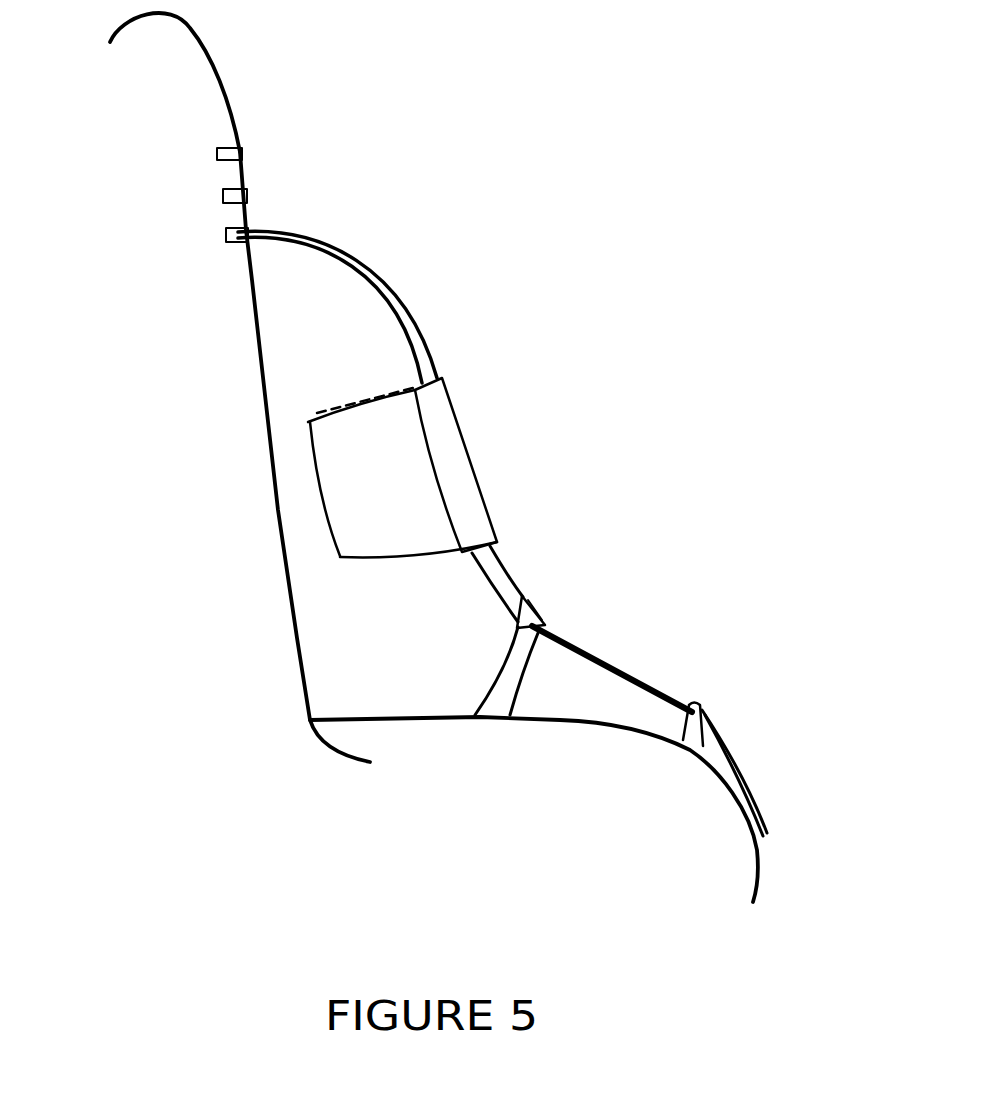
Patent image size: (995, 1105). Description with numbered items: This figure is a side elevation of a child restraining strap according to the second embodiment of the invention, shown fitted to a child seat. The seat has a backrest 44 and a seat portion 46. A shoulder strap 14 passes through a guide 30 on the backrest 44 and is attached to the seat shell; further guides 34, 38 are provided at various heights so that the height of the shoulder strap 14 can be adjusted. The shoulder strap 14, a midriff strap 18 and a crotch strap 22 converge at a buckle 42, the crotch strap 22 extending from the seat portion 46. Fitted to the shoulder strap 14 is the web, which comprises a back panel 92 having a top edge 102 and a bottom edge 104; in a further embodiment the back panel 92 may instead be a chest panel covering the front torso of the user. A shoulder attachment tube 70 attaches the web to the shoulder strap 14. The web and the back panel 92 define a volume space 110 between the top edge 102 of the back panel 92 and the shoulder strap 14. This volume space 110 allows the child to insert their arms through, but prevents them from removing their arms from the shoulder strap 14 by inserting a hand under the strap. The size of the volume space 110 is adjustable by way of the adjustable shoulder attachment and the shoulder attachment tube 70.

The shoulder strap 14 is at (372, 270).
The midriff strap 18 is at (497, 682).
The crotch strap 22 is at (605, 667).
The guide 30 is at (250, 231).
The guide 34 is at (247, 195).
The guide 38 is at (242, 150).
The buckle 42 is at (537, 612).
The backrest 44 is at (180, 48).
The seat portion 46 is at (645, 760).
The shoulder attachment tube 70 is at (465, 467).
The back panel 92 is at (337, 492).
The top edge of the back panel 102 is at (310, 418).
The bottom edge of the back panel 104 is at (412, 562).
The volume space 110 is at (320, 323).